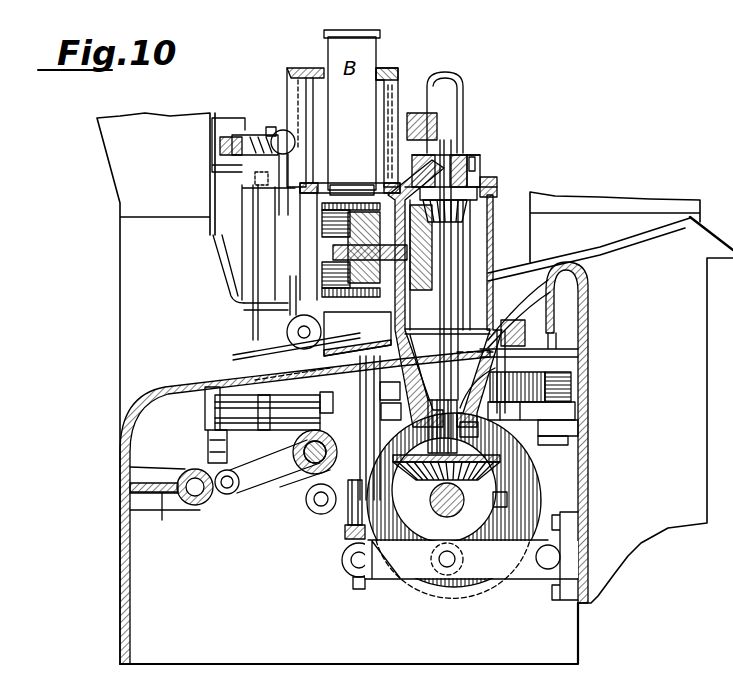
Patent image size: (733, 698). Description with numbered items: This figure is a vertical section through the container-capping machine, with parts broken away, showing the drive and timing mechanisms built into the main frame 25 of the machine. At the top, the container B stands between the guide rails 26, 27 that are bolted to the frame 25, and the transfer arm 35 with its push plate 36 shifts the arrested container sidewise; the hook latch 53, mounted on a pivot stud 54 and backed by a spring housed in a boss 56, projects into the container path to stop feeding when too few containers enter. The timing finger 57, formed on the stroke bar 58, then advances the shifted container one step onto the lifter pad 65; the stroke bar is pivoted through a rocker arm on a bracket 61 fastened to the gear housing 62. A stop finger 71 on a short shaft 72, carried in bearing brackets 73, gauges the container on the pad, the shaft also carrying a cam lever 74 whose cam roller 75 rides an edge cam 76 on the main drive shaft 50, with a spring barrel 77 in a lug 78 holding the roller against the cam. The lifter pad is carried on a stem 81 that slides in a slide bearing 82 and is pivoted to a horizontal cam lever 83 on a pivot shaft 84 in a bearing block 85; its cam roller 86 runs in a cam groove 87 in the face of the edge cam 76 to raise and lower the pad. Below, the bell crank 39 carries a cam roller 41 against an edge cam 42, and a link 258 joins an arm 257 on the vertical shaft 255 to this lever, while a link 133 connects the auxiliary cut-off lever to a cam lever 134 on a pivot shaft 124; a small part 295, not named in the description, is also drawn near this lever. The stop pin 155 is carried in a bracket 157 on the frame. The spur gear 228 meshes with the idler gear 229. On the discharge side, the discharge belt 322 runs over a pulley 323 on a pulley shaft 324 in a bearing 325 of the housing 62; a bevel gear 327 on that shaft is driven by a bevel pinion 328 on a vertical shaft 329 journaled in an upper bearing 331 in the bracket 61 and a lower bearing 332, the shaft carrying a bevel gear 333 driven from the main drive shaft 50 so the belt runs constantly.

The frame 25 is at (143, 405).
The guide rail 26 is at (300, 68).
The guide rail 27 is at (387, 66).
The transfer arm 35 is at (268, 128).
The push plate 36 is at (300, 75).
The bell crank 39 is at (394, 425).
The cam roller 41 is at (454, 500).
The edge cam 42 is at (588, 411).
The main drive shaft 50 is at (440, 503).
The hook latch 53 is at (248, 130).
The pivot stud 54 is at (230, 120).
The boss 56 is at (283, 130).
The timing finger 57 is at (393, 105).
The stroke bar 58 is at (440, 120).
The bracket 61 is at (480, 167).
The gear housing 62 is at (492, 177).
The lifter pad 65 is at (344, 186).
The stop finger 71 is at (304, 298).
The short shaft 72 is at (287, 333).
The bearing bracket 73 is at (293, 350).
The cam lever 74 is at (245, 354).
The cam roller 75 is at (337, 513).
The edge cam 76 is at (350, 527).
The spring barrel 77 is at (320, 400).
The lug 78 is at (323, 412).
The stem 81 is at (350, 548).
The slide bearing 82 is at (357, 334).
The cam lever 83 is at (511, 569).
The pivot shaft 84 is at (546, 564).
The bearing block 85 is at (565, 534).
The cam roller 86 is at (427, 577).
The cam groove 87 is at (507, 505).
The pivot shaft 124 is at (331, 476).
The link 133 is at (202, 393).
The cam lever 134 is at (276, 462).
The stop pin 155 is at (199, 506).
The bracket 157 is at (175, 503).
The spur gear 228 is at (588, 381).
The idler gear 229 is at (588, 393).
The vertical shaft 255 is at (555, 448).
The arm 257 is at (568, 430).
The link 258 is at (478, 430).
The bracket 295 is at (398, 381).
The discharge belt 322 is at (359, 203).
The pulley 323 is at (327, 225).
The pulley shaft 324 is at (344, 248).
The bearing 325 is at (344, 266).
The bevel gear 327 is at (469, 293).
The bevel pinion 328 is at (468, 213).
The vertical shaft 329 is at (452, 250).
The bearing 331 is at (465, 150).
The bearing 332 is at (555, 361).
The bevel gear 333 is at (500, 467).